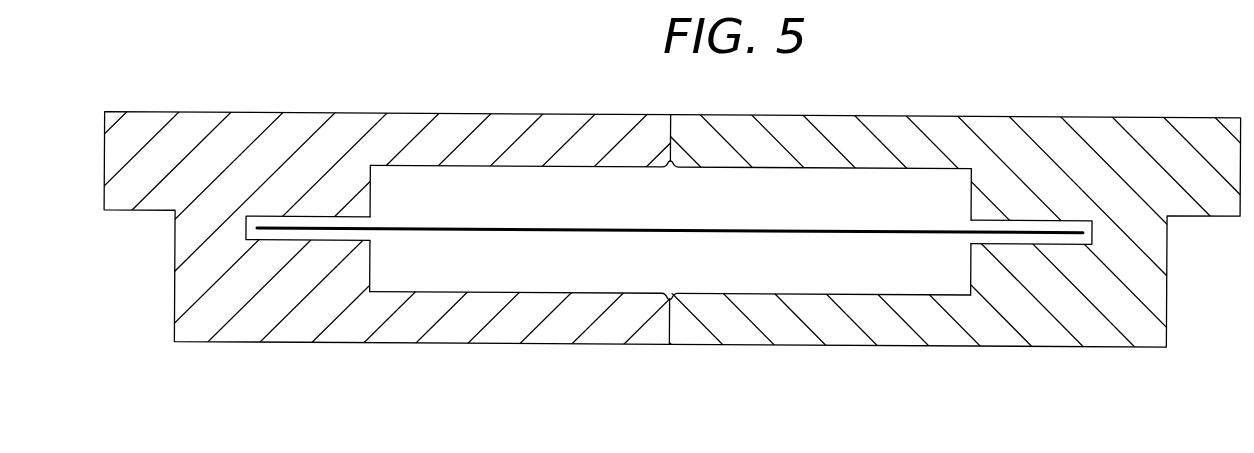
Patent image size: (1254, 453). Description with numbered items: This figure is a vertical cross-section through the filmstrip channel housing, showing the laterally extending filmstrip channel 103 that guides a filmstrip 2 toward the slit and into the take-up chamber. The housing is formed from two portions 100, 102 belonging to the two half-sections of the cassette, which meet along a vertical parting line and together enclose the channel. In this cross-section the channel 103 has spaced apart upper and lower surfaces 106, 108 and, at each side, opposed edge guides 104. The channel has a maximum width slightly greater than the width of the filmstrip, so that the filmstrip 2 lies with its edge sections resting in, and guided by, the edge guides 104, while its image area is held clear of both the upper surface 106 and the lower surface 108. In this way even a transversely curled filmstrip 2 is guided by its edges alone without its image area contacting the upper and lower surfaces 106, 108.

The filmstrip 2 is at (626, 229).
The portion of half-section 100 is at (364, 113).
The portion of half-section 102 is at (987, 117).
The filmstrip channel 103 is at (458, 253).
The edge guides 104 is at (270, 235).
The upper surface 106 is at (518, 163).
The lower surface 108 is at (810, 296).